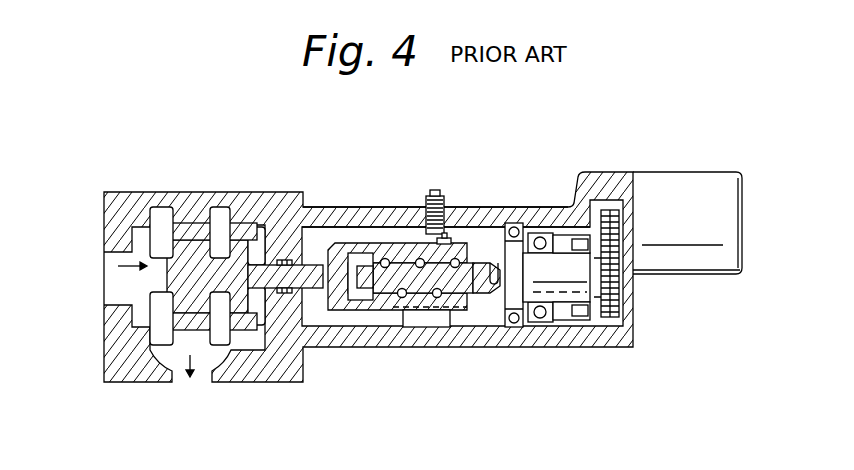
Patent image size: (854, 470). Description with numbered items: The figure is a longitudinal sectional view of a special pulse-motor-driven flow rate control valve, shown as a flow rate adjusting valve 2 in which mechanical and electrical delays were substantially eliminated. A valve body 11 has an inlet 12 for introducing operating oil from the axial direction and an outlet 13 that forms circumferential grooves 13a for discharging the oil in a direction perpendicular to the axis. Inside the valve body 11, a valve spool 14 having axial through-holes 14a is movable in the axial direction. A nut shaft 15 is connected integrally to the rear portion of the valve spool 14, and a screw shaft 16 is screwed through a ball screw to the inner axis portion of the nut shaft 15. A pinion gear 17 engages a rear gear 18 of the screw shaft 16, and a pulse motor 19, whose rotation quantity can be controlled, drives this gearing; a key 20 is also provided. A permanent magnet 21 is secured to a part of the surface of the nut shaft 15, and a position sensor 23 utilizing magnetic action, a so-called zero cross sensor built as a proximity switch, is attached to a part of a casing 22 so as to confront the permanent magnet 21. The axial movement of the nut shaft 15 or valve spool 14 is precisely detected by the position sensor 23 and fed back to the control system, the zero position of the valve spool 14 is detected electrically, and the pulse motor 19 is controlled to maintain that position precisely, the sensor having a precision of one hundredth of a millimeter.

The flow rate adjusting valve 2 is at (522, 265).
The valve body 11 is at (128, 200).
The inlet 12 is at (103, 285).
The outlet 13 is at (197, 383).
The circumferential grooves 13a is at (158, 342).
The valve spool 14 is at (233, 268).
The axial through-holes 14a is at (184, 240).
The nut shaft 15 is at (387, 243).
The screw shaft 16 is at (497, 294).
The pinion gear 17 is at (610, 240).
The rear gear 18 is at (613, 296).
The pulse motor 19 is at (706, 172).
The key 20 is at (415, 322).
The permanent magnet 21 is at (448, 238).
The casing 22 is at (497, 209).
The position sensor 23 is at (433, 192).